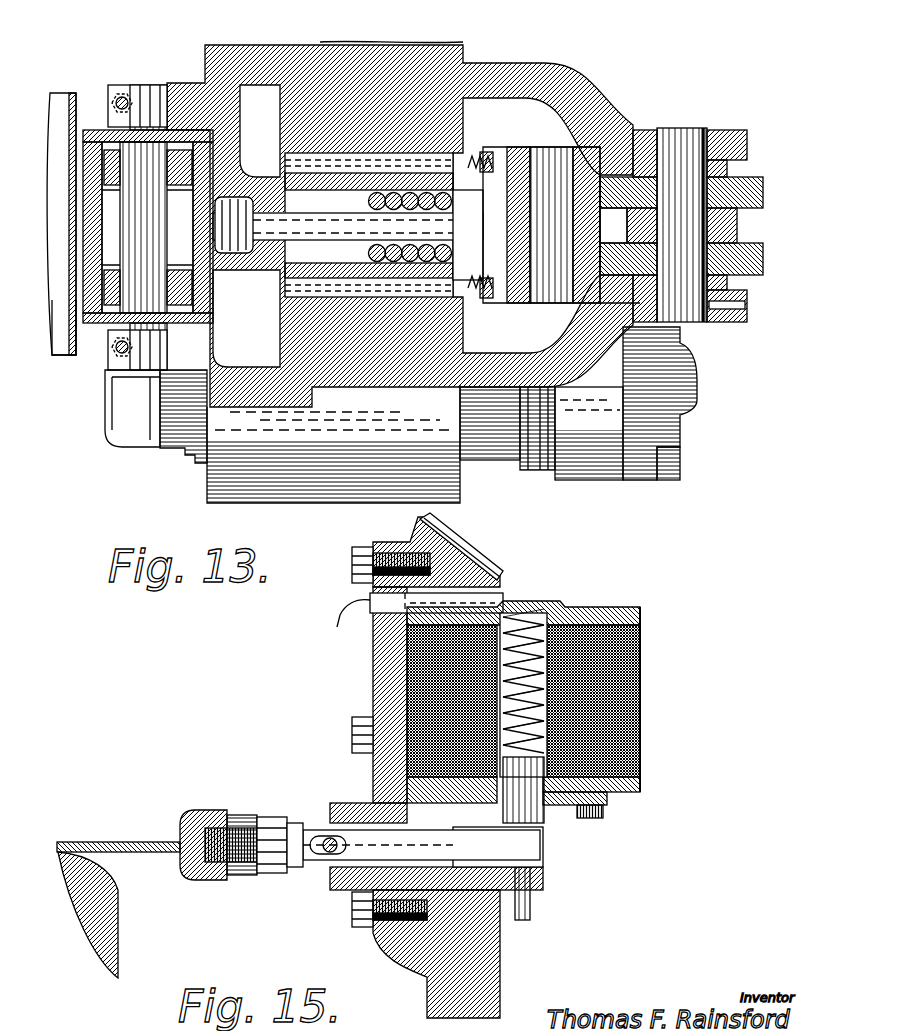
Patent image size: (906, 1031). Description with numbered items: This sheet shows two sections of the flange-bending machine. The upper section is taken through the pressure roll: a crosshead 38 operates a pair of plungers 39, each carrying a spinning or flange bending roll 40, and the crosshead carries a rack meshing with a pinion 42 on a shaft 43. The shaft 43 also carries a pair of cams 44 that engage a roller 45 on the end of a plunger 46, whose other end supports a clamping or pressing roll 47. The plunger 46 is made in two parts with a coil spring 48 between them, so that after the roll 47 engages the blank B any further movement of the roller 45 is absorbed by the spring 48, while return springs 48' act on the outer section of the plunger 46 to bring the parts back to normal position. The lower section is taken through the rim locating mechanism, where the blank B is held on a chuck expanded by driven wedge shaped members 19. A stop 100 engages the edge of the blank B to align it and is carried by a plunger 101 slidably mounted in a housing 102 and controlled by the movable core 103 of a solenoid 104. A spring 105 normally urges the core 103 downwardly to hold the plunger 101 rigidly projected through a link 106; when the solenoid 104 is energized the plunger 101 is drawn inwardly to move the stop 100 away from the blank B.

In FIG. 13, the crosshead 38 is at (600, 386).
In FIG. 13, the plungers 39 is at (680, 425).
In FIG. 13, the spinning or flange bending roll 40 is at (130, 435).
In FIG. 13, the pinion 42 is at (738, 222).
In FIG. 13, the shaft 43 is at (748, 152).
In FIG. 13, the cams 44 is at (765, 190).
In FIG. 13, the roller 45 is at (605, 175).
In FIG. 13, the plunger 46 is at (272, 292).
In FIG. 13, the clamping or pressing roll 47 is at (75, 358).
In FIG. 13, the coil spring 48 is at (369, 146).
In FIG. 13, the springs 48' is at (497, 223).
In FIG. 13, the blank B is at (85, 93).
In FIG. 15, the blank B is at (100, 842).
In FIG. 15, the driven wedge shaped members 19 is at (105, 903).
In FIG. 15, the stops 100 is at (193, 810).
In FIG. 15, the plunger 101 is at (355, 850).
In FIG. 15, the housing 102 is at (395, 800).
In FIG. 15, the movable core 103 is at (550, 795).
In FIG. 15, the solenoid 104 is at (505, 612).
In FIG. 15, the spring 105 is at (572, 613).
In FIG. 15, the link 106 is at (545, 880).